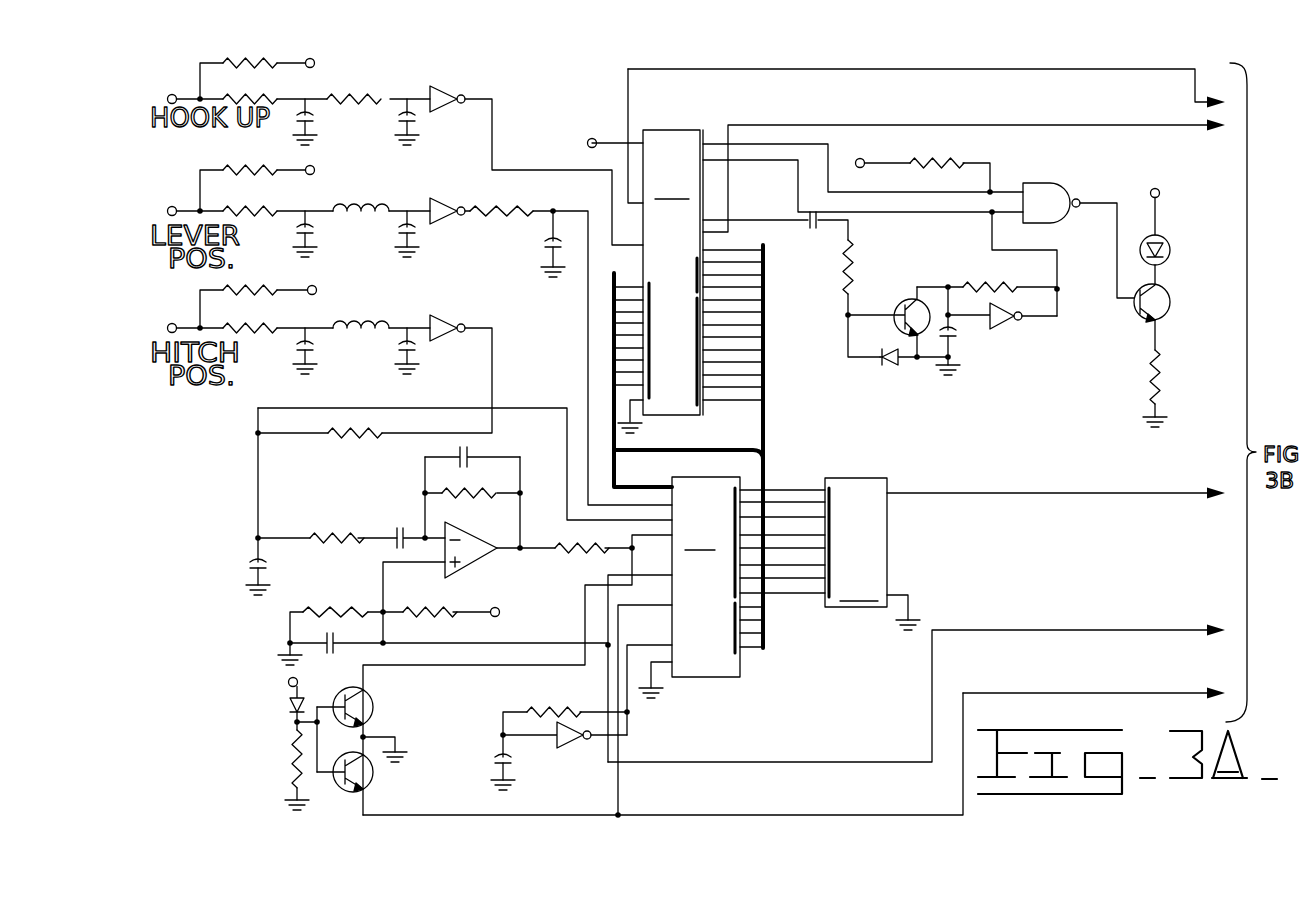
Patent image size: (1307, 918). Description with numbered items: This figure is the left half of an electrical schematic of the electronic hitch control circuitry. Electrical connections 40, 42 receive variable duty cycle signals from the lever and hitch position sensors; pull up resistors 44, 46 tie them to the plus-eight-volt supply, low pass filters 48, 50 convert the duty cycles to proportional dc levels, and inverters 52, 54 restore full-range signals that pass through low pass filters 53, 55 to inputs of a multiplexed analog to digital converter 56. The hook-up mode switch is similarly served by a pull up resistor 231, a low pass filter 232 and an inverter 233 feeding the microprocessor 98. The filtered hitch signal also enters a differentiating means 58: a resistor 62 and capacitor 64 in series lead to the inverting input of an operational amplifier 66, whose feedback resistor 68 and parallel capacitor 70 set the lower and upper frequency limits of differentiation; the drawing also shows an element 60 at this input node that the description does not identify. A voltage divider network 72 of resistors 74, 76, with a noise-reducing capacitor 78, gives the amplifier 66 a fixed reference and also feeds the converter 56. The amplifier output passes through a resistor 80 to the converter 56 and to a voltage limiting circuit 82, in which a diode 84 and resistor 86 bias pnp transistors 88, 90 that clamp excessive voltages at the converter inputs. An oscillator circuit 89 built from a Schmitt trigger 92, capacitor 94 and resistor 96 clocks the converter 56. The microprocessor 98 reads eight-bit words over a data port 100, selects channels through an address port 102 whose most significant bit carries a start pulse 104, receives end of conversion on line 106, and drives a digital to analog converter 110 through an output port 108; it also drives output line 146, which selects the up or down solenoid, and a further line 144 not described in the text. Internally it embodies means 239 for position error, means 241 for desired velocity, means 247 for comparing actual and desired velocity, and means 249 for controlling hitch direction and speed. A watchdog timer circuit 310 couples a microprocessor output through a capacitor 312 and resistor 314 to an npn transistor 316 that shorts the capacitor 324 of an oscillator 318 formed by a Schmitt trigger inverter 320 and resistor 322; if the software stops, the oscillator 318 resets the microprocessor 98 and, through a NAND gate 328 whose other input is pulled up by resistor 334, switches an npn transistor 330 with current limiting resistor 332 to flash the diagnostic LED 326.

The pull up resistor 231 is at (233, 58).
The low pass filter 232 is at (413, 78).
The inverter 233 is at (445, 95).
The electrical connection 40 is at (178, 204).
The pull up resistor 44 is at (268, 168).
The low pass filter 48 is at (374, 200).
The inverter 52 is at (452, 204).
The low pass filter 53 is at (549, 197).
The electrical connection 42 is at (180, 304).
The pull up resistor 46 is at (252, 289).
The low pass filter 50 is at (377, 318).
The inverter 54 is at (456, 326).
The low pass filter 55 is at (244, 514).
The differentiating means 58 is at (508, 446).
The capacitor 60 is at (260, 512).
The resistor 62 is at (311, 535).
The capacitor 64 is at (401, 532).
The operational amplifier 66 is at (468, 547).
The feedback resistor 68 is at (465, 496).
The capacitor 70 is at (456, 455).
The voltage divider network 72 is at (365, 588).
The resistor 74 is at (436, 612).
The resistor 76 is at (312, 612).
The capacitor 78 is at (322, 641).
The resistor 80 is at (558, 553).
The voltage limiting circuit 82 is at (450, 675).
The diode 84 is at (292, 708).
The resistor 86 is at (289, 761).
The pnp transistor 88 is at (366, 701).
The oscillator circuit 89 is at (565, 695).
The pnp transistor 90 is at (370, 787).
The Schmitt trigger 92 is at (563, 748).
The capacitor 94 is at (517, 759).
The resistor 96 is at (566, 714).
The microprocessor 98 is at (648, 117).
The data port 100 is at (674, 362).
The address port 102 is at (732, 642).
The start pulse 104 is at (761, 650).
The end of conversion line 106 is at (614, 476).
The output port 108 is at (836, 505).
The digital to analog converter 110 is at (1016, 554).
The multiplexed analog to digital converter 56 is at (706, 577).
The hitch position error means 239 is at (635, 136).
The desired velocity means 241 is at (707, 115).
The velocity comparison means 247 is at (714, 128).
The hitch control means 249 is at (669, 422).
The output line to FIG. 3B 144 is at (1133, 68).
The output line 146 is at (1140, 126).
The watchdog timer circuit 310 is at (918, 292).
The capacitor 312 is at (816, 232).
The resistor 314 is at (856, 259).
The npn transistor 316 is at (908, 302).
The oscillator 318 is at (1032, 337).
The Schmitt trigger inverter 320 is at (1013, 330).
The resistor 322 is at (1006, 290).
The capacitor 324 is at (944, 340).
The diagnostic LED 326 is at (1166, 243).
The NAND gate 328 is at (1050, 184).
The npn transistor 330 is at (1162, 294).
The current limiting resistor 332 is at (1158, 359).
The pull up resistor 334 is at (955, 164).